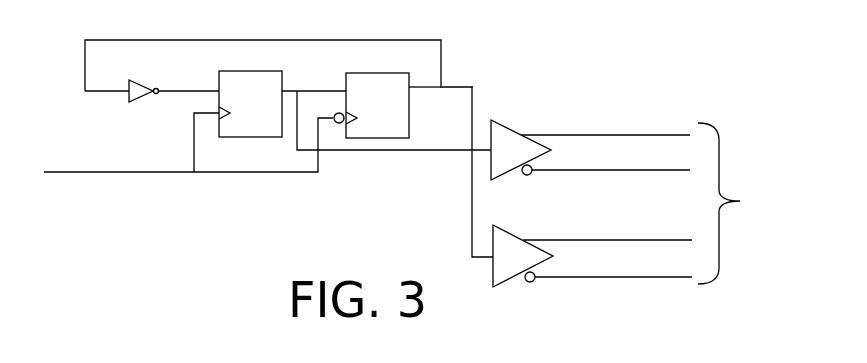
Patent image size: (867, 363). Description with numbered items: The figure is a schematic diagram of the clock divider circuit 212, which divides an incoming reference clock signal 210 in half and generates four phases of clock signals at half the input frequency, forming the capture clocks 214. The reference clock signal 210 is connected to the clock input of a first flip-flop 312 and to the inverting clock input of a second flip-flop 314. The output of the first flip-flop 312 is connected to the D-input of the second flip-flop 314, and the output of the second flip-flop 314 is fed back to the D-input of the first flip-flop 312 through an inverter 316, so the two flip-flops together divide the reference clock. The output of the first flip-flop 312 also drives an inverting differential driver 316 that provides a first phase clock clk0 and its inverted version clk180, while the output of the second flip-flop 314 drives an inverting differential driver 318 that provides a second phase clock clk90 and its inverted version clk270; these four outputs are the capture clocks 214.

The reference clock signal 210 is at (95, 174).
The clock divider circuit 212 is at (546, 58).
The capture clocks 214 is at (747, 203).
The first flip-flop 312 is at (250, 104).
The second flip-flop 314 is at (371, 105).
The inverter 316 is at (143, 97).
The inverting differential driver 318 is at (522, 236).